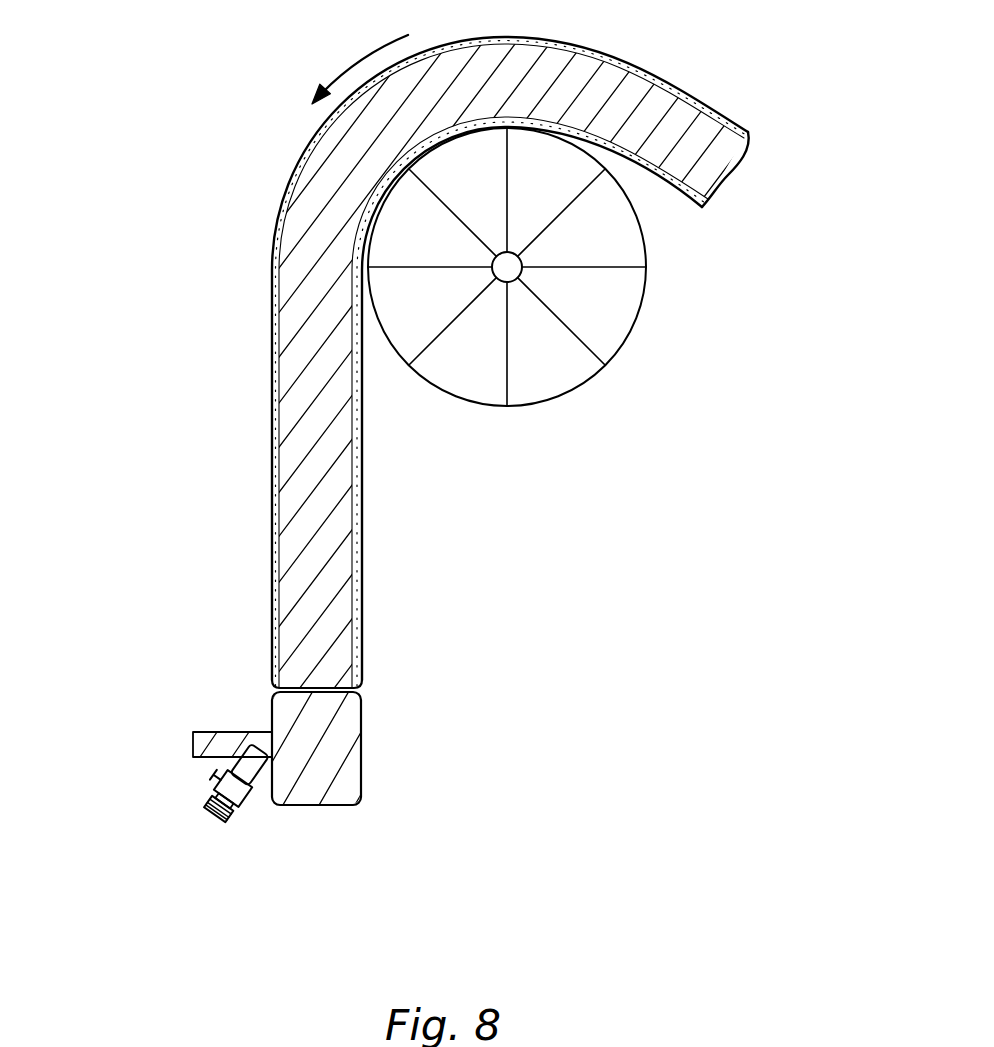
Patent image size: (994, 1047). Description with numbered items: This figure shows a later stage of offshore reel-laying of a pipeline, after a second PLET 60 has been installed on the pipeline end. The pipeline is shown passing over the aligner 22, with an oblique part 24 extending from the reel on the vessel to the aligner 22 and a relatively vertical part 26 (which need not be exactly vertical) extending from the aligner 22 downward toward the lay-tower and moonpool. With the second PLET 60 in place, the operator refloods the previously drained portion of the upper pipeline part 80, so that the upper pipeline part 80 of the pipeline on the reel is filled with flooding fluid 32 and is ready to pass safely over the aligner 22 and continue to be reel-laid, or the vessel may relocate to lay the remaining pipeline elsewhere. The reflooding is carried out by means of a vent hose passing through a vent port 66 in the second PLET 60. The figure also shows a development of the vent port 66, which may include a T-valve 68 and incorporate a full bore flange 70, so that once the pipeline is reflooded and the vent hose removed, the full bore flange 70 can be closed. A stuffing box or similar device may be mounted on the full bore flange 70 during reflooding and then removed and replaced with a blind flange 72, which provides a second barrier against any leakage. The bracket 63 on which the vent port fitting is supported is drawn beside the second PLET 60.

The aligner 22 is at (570, 392).
The oblique part 24 is at (497, 523).
The vertical part 26 is at (362, 535).
The flooding fluid 32 is at (330, 432).
The second PLET 60 is at (360, 748).
The bracket 63 is at (225, 730).
The vent port 66 is at (237, 768).
The T-valve 68 is at (247, 803).
The full bore flange 70 is at (237, 825).
The blind flange 72 is at (213, 818).
The upper pipeline part 80 is at (272, 273).